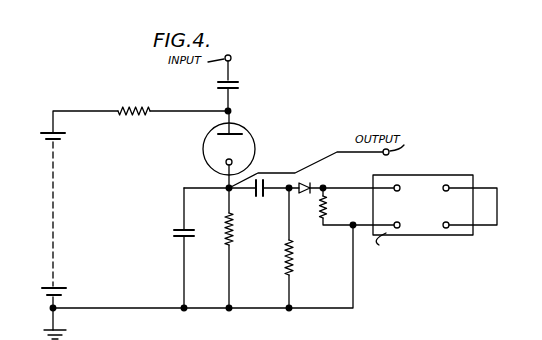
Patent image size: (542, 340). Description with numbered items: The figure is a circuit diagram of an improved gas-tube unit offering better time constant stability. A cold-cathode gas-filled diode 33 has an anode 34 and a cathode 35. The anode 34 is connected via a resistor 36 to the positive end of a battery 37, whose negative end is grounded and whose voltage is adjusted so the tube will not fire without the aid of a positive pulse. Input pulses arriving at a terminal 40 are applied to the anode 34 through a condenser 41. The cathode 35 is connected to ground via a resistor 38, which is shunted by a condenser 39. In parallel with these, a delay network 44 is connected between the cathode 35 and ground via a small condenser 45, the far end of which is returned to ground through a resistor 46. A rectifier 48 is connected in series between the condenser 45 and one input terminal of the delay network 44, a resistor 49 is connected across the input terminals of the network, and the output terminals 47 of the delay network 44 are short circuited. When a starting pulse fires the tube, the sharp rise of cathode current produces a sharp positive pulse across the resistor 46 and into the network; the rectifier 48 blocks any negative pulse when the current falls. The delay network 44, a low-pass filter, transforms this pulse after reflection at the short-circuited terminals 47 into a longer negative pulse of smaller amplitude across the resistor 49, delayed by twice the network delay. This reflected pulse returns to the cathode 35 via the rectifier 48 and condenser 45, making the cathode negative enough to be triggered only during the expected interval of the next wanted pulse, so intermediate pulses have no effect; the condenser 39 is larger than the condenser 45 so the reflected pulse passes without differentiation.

The cold-cathode gas-filled diode 33 is at (247, 148).
The anode 34 is at (246, 134).
The cathode 35 is at (240, 162).
The resistor 36 is at (130, 107).
The battery 37 is at (50, 189).
The resistor 38 is at (228, 233).
The condenser 39 is at (172, 233).
The terminal 40 is at (233, 56).
The condenser 41 is at (238, 85).
The delay network 44 is at (412, 178).
The small condenser 45 is at (259, 197).
The resistor 46 is at (297, 260).
The output terminals 47 is at (483, 204).
The rectifier 48 is at (312, 178).
The resistor 49 is at (328, 203).